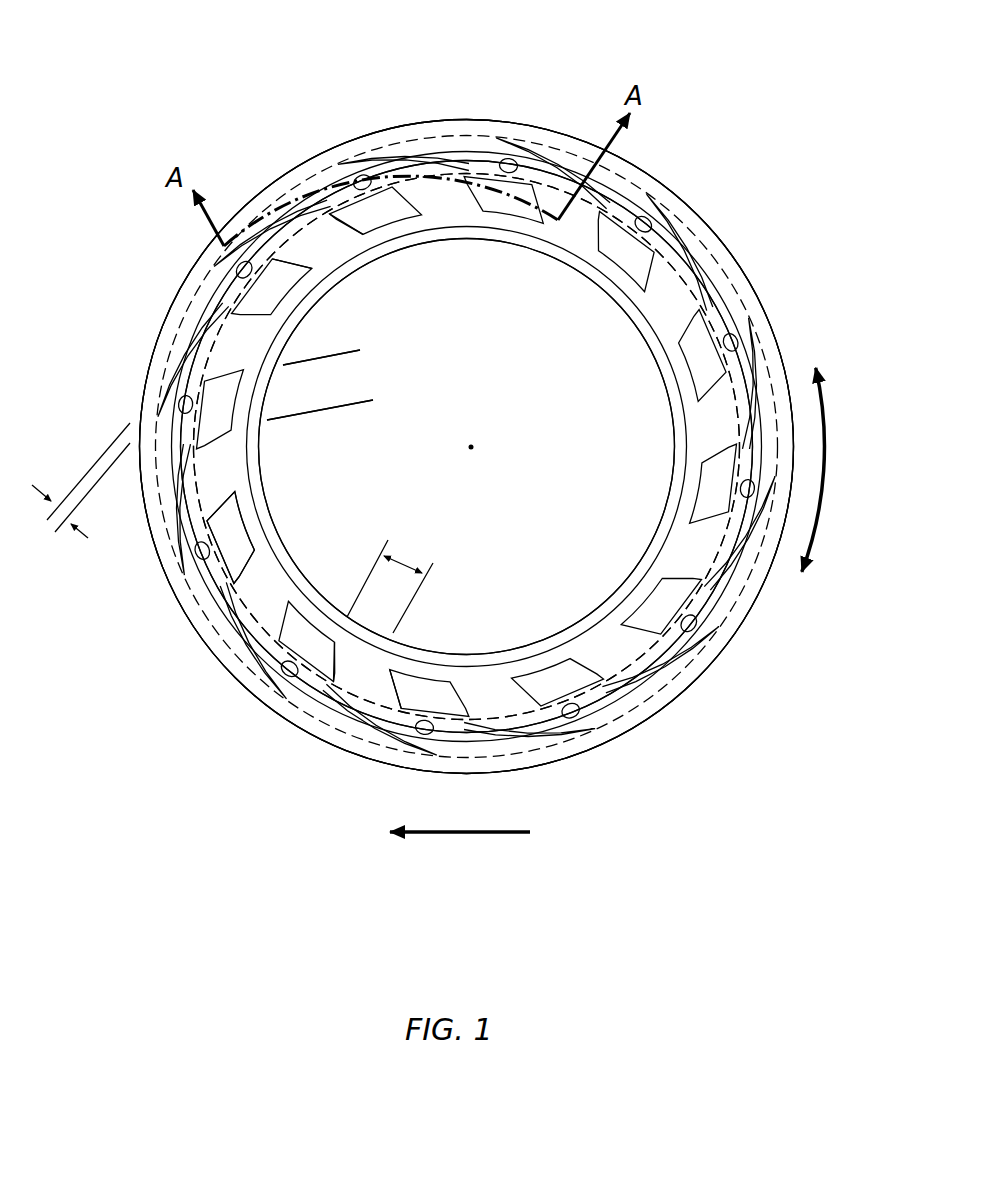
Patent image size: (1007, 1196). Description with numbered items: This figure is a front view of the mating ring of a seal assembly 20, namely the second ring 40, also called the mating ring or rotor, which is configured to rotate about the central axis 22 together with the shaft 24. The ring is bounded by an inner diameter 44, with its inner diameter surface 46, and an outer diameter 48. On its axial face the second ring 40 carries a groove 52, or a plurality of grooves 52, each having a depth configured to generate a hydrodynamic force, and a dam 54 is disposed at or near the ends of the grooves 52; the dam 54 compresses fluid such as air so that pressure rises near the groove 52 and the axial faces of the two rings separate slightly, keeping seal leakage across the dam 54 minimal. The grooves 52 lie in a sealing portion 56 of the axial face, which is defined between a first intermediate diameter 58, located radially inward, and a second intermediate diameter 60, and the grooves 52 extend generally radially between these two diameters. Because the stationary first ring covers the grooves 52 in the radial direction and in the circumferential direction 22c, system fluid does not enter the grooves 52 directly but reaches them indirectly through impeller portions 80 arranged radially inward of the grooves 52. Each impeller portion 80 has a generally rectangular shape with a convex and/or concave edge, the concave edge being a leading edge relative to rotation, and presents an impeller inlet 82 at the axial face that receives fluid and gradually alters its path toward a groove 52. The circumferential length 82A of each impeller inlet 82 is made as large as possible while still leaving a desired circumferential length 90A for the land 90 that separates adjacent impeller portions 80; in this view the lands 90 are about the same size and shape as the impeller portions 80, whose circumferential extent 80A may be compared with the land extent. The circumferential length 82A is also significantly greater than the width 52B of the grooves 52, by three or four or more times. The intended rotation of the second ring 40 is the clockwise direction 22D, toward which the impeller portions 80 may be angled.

The seal assembly 20 is at (724, 65).
The central axis 22 is at (473, 451).
The circumferential direction 22c is at (821, 521).
The clockwise direction 22D is at (468, 837).
The shaft 24 is at (484, 362).
The second ring 40 is at (720, 250).
The inner diameter 44 is at (677, 383).
The inner diameter surface 46 is at (656, 539).
The outer diameter 48 is at (750, 282).
The groove 52 is at (426, 150).
The width of the grooves 52B is at (80, 523).
The dam 54 is at (545, 155).
The sealing portion 56 is at (672, 276).
The first intermediate diameter 58 is at (690, 287).
The second intermediate diameter 60 is at (683, 220).
The impeller portion 80 is at (380, 216).
The circumferential extent of the impeller portions 80A is at (348, 358).
The impeller inlet 82 is at (246, 526).
The circumferential length of an impeller inlet 82A is at (357, 398).
The land 90 is at (327, 248).
The circumferential length of a land 90A is at (407, 563).